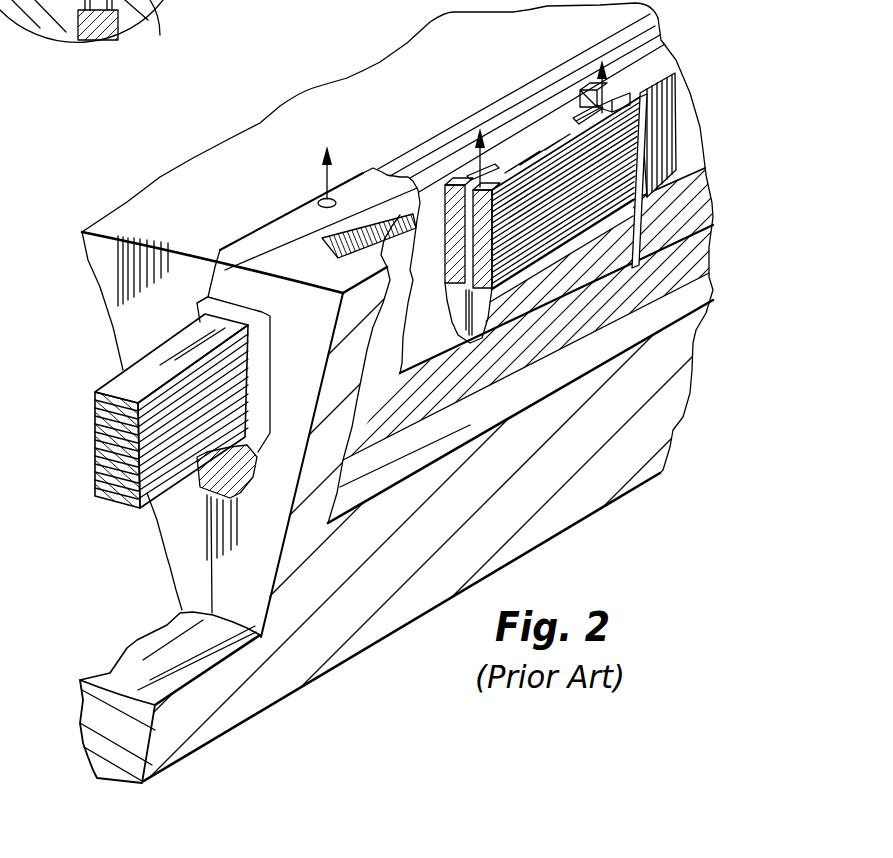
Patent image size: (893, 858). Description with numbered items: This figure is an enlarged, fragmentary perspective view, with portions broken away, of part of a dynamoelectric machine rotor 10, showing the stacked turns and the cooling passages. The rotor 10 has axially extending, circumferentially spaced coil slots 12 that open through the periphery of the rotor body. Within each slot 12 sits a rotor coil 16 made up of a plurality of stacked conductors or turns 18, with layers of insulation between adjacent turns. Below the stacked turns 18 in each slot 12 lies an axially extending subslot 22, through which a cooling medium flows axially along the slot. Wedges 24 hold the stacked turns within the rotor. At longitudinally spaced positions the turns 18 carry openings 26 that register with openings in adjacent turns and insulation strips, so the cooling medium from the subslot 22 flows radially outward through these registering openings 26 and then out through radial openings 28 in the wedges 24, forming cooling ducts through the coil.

The rotor 10 is at (155, 208).
The coil slot 12 is at (428, 197).
The rotor coil 16 is at (157, 27).
The stacked turns 18 is at (113, 445).
The subslot 22 is at (207, 493).
The wedge 24 is at (243, 282).
The openings 26 is at (467, 193).
The radial openings 28 is at (320, 202).